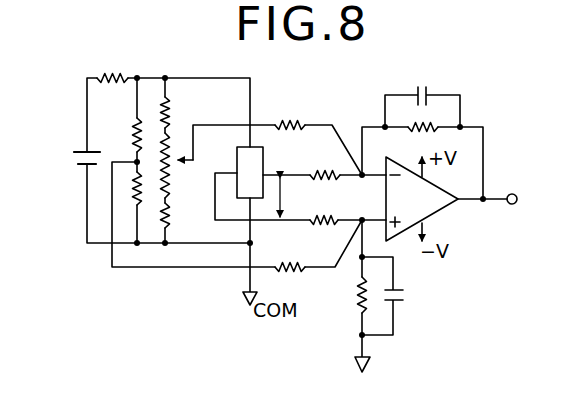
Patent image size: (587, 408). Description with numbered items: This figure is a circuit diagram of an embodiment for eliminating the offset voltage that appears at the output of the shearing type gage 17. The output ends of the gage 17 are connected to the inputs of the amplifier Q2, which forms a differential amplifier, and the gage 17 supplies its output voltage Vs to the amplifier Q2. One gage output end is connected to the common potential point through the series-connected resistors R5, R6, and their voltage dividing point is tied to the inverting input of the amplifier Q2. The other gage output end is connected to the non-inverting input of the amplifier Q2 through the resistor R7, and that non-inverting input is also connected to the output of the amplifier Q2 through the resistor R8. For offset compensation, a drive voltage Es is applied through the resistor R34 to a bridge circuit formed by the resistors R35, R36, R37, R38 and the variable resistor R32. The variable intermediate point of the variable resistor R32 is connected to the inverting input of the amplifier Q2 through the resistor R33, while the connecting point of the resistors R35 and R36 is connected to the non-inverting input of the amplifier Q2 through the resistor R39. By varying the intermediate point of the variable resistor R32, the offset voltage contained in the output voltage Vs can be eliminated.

The drive voltage Es is at (73, 162).
The resistor R34 is at (112, 67).
The resistor R35 is at (121, 135).
The resistor R36 is at (130, 190).
The resistor R37 is at (182, 112).
The variable resistor R32 is at (183, 165).
The resistor R38 is at (183, 215).
The shearing type gage 17 is at (237, 160).
The resistor R33 is at (290, 114).
The resistor R7 is at (325, 163).
The resistor R5 is at (324, 210).
The output voltage Vs is at (294, 198).
The resistor R39 is at (294, 282).
The resistor R6 is at (349, 296).
The resistor R8 is at (428, 132).
The amplifier Q2 is at (435, 215).